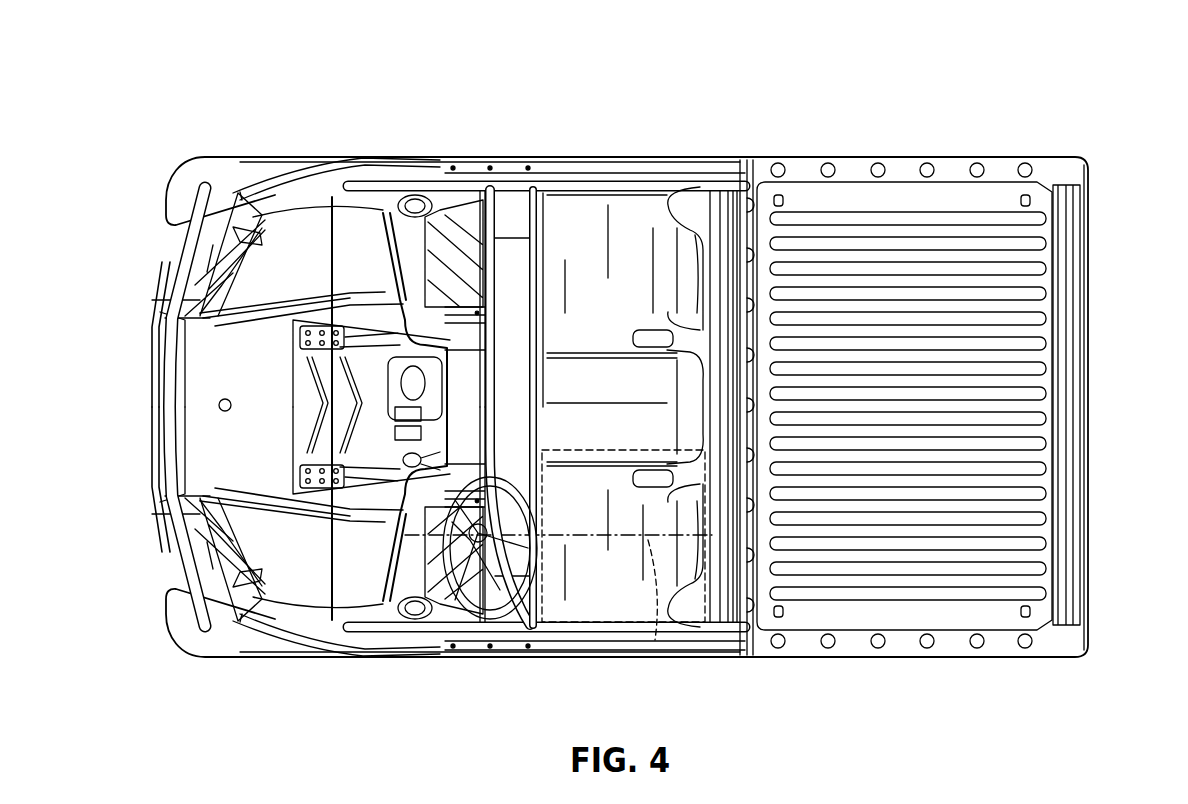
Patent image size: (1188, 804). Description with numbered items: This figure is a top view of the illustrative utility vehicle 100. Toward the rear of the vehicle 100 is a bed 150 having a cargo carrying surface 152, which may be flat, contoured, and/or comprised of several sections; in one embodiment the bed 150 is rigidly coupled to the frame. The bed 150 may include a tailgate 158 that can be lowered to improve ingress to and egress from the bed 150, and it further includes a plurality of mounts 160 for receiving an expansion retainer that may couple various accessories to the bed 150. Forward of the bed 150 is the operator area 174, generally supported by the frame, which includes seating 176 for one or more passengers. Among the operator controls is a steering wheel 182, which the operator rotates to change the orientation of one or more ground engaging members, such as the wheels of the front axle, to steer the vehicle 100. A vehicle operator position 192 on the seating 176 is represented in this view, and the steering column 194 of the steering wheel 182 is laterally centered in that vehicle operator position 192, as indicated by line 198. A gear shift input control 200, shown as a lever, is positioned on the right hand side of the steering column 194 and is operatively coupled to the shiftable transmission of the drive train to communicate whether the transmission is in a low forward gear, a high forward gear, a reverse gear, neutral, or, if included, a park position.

The vehicle 100 is at (659, 390).
The bed 150 is at (953, 399).
The cargo carrying surface 152 is at (958, 608).
The tailgate 158 is at (1068, 262).
The mounts 160 is at (928, 162).
The operator area 174 is at (583, 242).
The seating 176 is at (665, 406).
The steering wheel 182 is at (533, 605).
The vehicle operator position 192 is at (608, 640).
The steering column 194 is at (448, 592).
The line 198 is at (655, 640).
The gear shift input control 200 is at (420, 458).